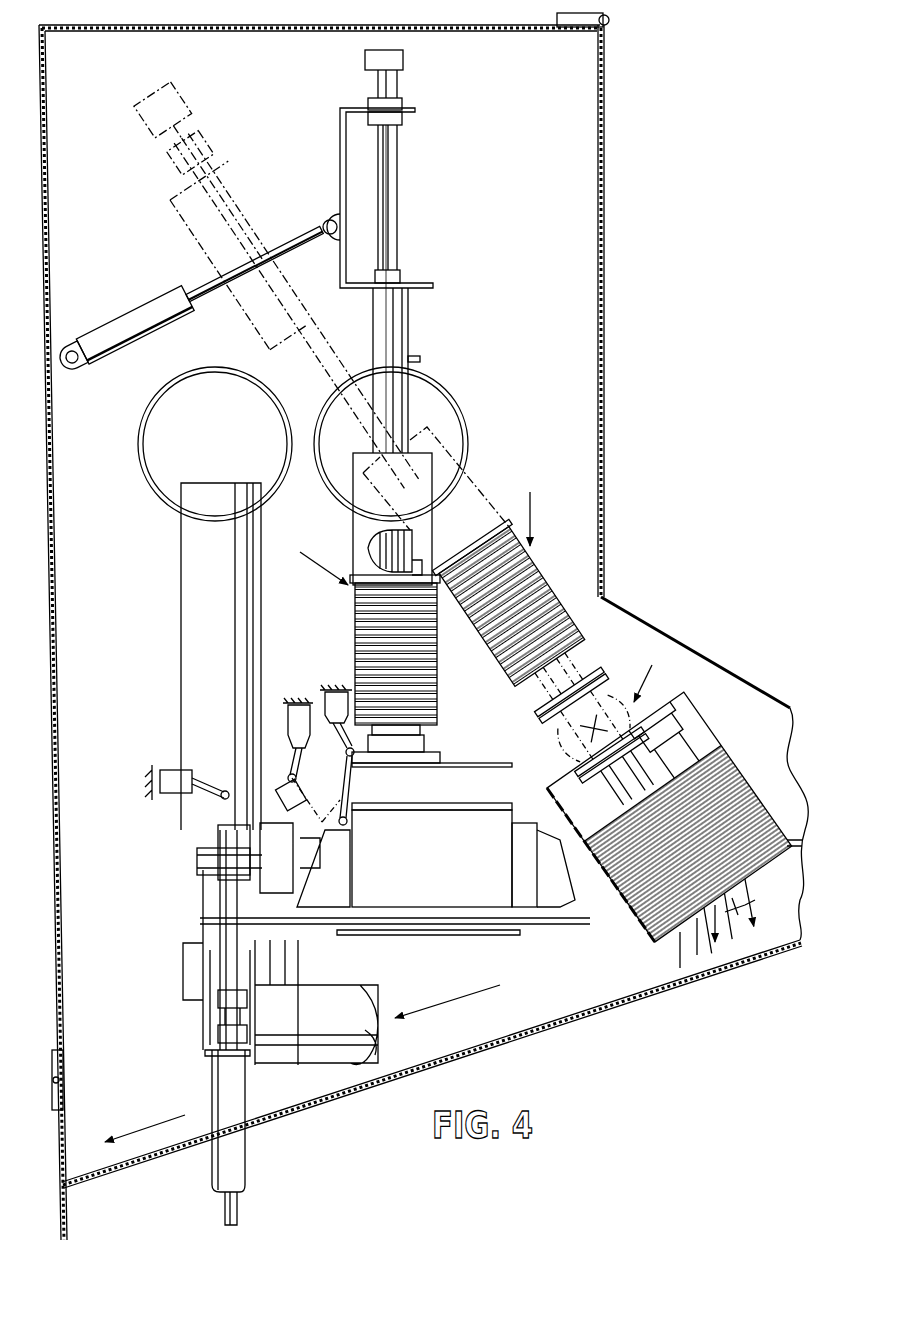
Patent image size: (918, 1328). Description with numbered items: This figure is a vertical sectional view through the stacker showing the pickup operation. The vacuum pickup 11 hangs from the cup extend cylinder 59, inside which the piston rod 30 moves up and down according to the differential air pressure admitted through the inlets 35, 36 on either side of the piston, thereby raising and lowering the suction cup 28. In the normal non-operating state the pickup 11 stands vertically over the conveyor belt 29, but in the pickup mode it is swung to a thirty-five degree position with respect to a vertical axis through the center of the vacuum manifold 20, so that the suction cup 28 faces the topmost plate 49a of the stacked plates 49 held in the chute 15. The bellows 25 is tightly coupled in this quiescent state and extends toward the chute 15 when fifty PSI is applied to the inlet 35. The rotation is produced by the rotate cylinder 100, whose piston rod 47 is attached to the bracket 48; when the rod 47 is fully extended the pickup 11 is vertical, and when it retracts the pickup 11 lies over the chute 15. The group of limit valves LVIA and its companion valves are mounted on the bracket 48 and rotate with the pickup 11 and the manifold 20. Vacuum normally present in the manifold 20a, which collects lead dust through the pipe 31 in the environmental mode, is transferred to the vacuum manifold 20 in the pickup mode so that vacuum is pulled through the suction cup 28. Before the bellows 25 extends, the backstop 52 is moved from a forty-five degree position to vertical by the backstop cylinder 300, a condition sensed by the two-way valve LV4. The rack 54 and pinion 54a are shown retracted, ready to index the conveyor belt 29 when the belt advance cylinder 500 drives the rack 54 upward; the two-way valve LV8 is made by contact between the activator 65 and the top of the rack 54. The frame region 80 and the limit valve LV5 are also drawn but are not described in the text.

The vacuum pickup 11 is at (479, 642).
The chute or bin 15 is at (678, 722).
The vacuum manifold 20 is at (440, 392).
The manifold (dust collector) 20a is at (147, 416).
The bellows 25 is at (437, 680).
The suction cup 28 is at (428, 758).
The conveyor belt 29 is at (445, 922).
The piston rod 30 is at (398, 200).
The pipe 31 is at (183, 583).
The inlet 35 is at (420, 358).
The inlet 36 is at (415, 560).
The piston rod 47 is at (300, 252).
The bracket 48 is at (340, 160).
The stacked plates (battery elements) 49 is at (608, 838).
The topmost plate 49a is at (460, 767).
The backstop 52 is at (315, 848).
The rack 54 is at (197, 858).
The pinion or worm gear 54a is at (218, 828).
The cup extend cylinder 59 is at (408, 330).
The activator 65 is at (225, 790).
The frame 80 is at (65, 1125).
The rotate cylinder 100 is at (150, 317).
The backstop cylinder 300 is at (282, 780).
The belt advance cylinder 500 is at (250, 1168).
The two-way valve LV4 is at (290, 706).
The limit switch LV5 is at (336, 690).
The two-way valve LV8 is at (170, 775).
The limit valves LV1A to LV1K LVIA is at (492, 52).